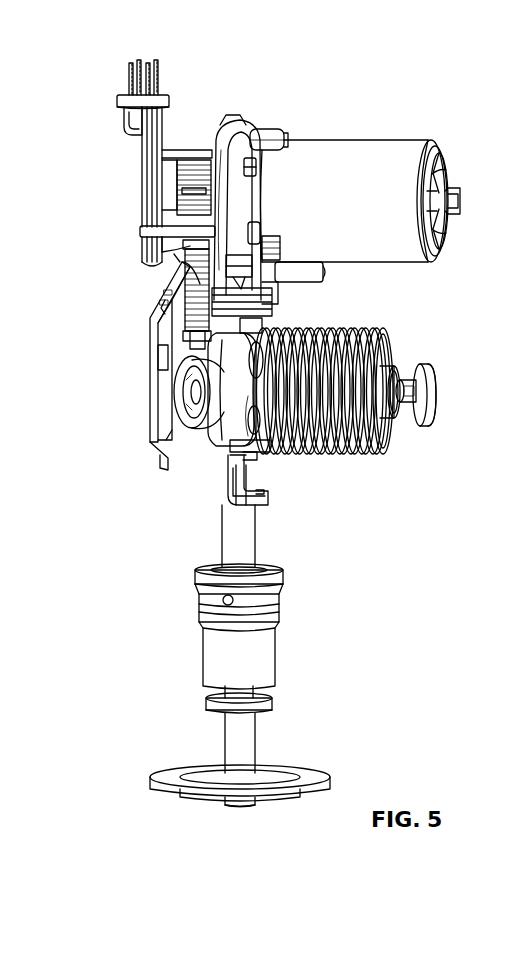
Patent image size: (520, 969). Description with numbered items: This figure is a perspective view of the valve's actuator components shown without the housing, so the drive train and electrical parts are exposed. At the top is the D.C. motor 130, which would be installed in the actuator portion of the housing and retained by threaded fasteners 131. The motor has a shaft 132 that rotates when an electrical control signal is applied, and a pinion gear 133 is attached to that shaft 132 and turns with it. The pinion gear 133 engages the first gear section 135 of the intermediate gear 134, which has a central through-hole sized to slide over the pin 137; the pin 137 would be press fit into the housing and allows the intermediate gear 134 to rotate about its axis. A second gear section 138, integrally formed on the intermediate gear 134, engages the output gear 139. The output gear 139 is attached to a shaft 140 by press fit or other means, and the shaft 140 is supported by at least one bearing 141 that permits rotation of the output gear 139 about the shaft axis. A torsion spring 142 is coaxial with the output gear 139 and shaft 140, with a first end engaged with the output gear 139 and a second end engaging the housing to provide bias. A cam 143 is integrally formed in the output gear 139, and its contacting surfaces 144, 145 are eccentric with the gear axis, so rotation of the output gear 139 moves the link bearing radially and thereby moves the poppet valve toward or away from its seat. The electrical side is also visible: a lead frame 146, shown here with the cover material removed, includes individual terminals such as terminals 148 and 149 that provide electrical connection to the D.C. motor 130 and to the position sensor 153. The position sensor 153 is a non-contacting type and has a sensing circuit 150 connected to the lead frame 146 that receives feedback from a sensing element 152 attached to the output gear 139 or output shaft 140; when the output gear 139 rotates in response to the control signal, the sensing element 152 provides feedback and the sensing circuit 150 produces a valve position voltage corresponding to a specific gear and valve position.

The D.C. motor 130 is at (353, 158).
The threaded fasteners 131 is at (272, 128).
The shaft 132 is at (178, 182).
The pinion gear 133 is at (194, 178).
The intermediate gear 134 is at (185, 290).
The first gear section 135 is at (191, 314).
The pin 137 is at (323, 273).
The second gear section 138 is at (287, 290).
The output gear 139 is at (250, 466).
The shaft 140 is at (410, 372).
The bearing 141 is at (387, 421).
The torsion spring 142 is at (345, 462).
The cam 143 is at (240, 440).
The contacting surface 144 is at (235, 434).
The contacting surface 145 is at (285, 450).
The lead frame 146 is at (122, 72).
The terminal 148 is at (148, 231).
The terminal 149 is at (140, 180).
The sensing circuit 150 is at (160, 352).
The sensing element 152 is at (186, 398).
The position sensor 153 is at (148, 385).